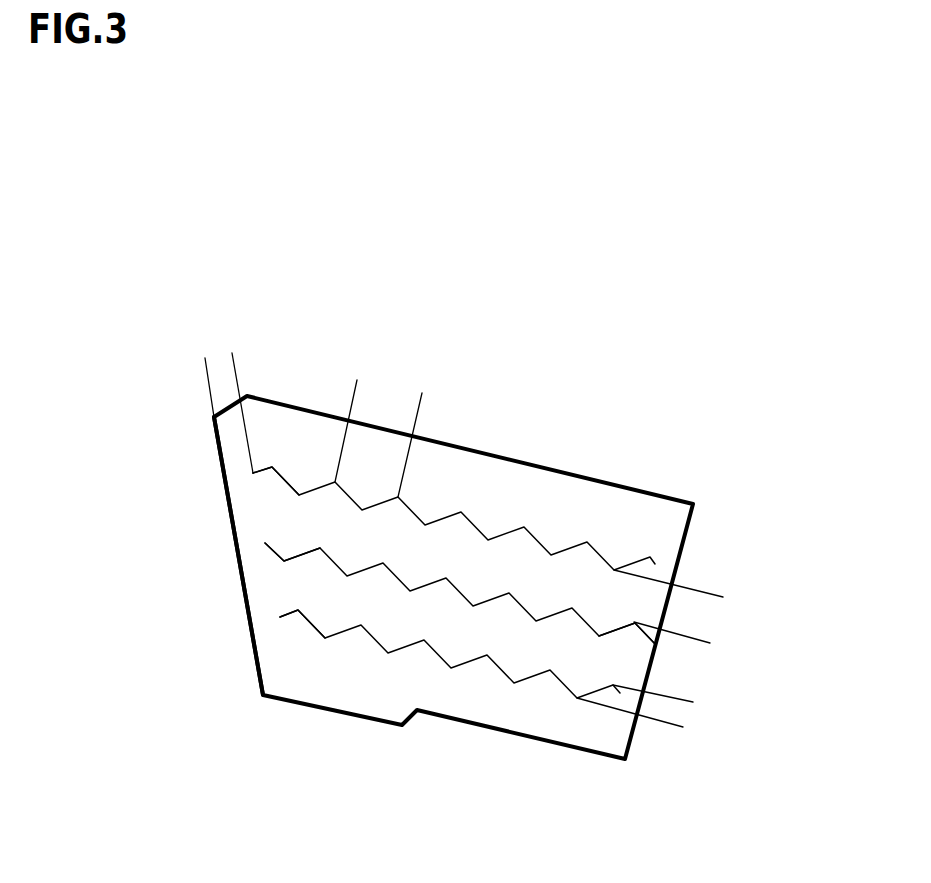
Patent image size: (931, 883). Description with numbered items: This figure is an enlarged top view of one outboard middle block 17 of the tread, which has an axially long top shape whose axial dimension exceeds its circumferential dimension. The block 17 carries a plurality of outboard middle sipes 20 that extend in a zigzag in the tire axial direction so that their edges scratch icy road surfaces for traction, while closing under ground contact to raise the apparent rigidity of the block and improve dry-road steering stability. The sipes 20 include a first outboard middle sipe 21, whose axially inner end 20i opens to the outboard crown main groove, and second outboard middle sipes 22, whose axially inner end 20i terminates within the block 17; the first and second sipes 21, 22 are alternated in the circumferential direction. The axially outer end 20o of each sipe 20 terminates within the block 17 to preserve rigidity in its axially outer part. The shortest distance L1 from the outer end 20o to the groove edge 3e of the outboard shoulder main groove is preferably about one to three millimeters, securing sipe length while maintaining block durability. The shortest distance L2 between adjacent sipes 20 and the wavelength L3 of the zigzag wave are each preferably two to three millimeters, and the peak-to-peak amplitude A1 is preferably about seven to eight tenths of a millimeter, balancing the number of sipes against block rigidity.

The outboard middle block 17 is at (452, 485).
The groove edge of outboard shoulder main groove 3e is at (225, 498).
The outboard middle sipe 20 is at (391, 621).
The first outboard middle sipe 21 is at (394, 575).
The second outboard middle sipe 22 is at (475, 525).
The axially outer end of outboard middle sipe 20o is at (265, 543).
The axially inner end of outboard middle sipe 20i is at (657, 645).
The shortest distance from axially outer sipe end to groove edge L1 is at (268, 352).
The shortest distance between adjacent outboard middle sipes L2 is at (729, 563).
The wavelength of zigzag wave of outboard middle sipe L3 is at (420, 400).
The peak-to-peak amplitude of outboard middle sipe A1 is at (697, 680).